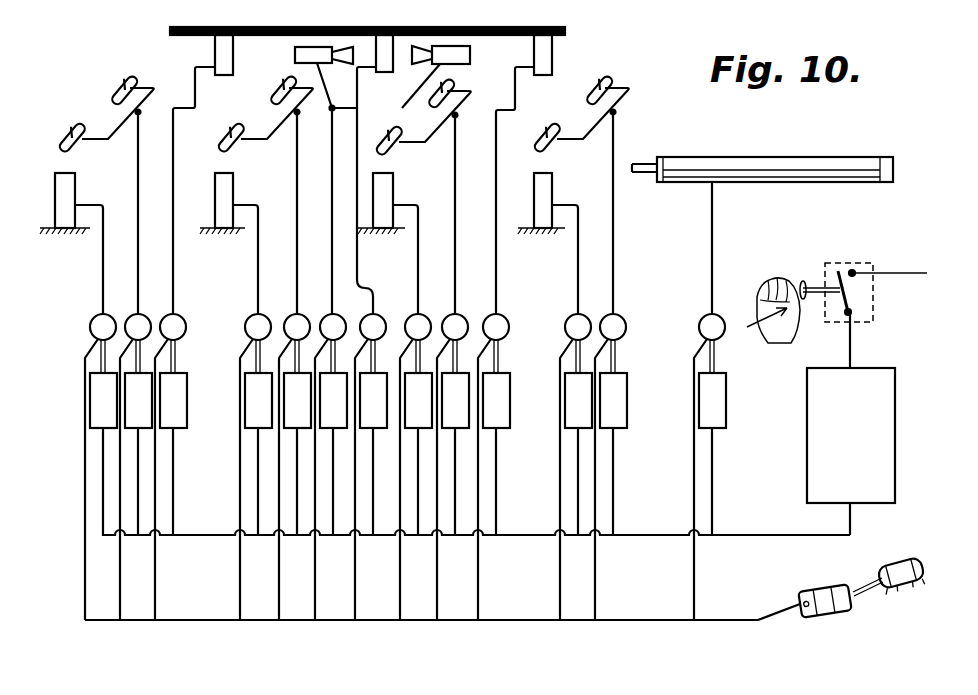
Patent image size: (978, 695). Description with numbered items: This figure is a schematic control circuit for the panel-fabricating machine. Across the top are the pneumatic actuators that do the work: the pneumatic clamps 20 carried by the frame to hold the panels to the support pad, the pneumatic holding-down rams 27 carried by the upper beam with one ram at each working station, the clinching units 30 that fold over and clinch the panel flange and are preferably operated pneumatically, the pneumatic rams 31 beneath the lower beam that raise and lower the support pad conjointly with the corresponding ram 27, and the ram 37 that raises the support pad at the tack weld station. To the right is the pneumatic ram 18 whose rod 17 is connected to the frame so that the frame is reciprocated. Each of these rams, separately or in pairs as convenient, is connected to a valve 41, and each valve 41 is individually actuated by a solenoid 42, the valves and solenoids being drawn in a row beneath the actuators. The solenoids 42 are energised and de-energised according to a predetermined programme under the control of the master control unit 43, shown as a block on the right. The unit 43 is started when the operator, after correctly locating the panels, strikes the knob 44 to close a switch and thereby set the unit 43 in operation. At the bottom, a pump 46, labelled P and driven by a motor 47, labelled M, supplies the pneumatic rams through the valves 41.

The rod 17 is at (648, 164).
The pneumatic ram 18 is at (755, 158).
The pneumatic clamps 20 is at (343, 194).
The pneumatic holding-down ram 27 is at (215, 53).
The clinching units 30 is at (295, 58).
The pneumatic ram 31 is at (215, 198).
The ram 37 is at (55, 198).
The valve 41 is at (165, 313).
The solenoid 42 is at (165, 390).
The master control unit 43 is at (851, 423).
The knob 44 is at (806, 286).
The pump 46 is at (812, 587).
The motor 47 is at (906, 558).
The motor M is at (925, 568).
The pump P is at (852, 608).